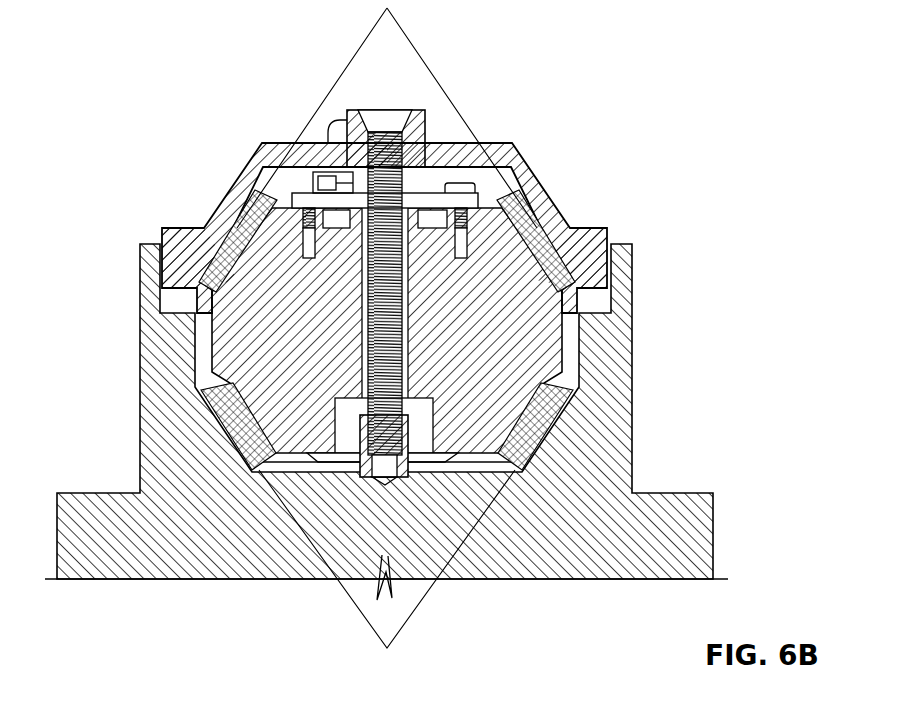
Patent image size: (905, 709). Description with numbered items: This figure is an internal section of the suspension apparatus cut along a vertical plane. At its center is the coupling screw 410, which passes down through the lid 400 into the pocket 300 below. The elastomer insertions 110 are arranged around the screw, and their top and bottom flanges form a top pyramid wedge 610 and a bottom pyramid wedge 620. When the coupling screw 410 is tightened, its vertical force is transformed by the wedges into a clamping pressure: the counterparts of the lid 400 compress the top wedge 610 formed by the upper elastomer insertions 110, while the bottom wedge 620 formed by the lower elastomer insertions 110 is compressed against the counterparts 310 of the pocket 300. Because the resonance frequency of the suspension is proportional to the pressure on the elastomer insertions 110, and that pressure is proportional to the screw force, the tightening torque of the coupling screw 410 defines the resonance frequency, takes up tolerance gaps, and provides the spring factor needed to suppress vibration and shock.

The pocket 300 is at (197, 562).
The counterparts of the pocket 310 is at (533, 440).
The elastomer insertions 110 is at (530, 205).
The lid 400 is at (185, 228).
The coupling screw 410 is at (387, 108).
The top pyramid wedge 610 is at (447, 90).
The bottom pyramid wedge 620 is at (348, 598).